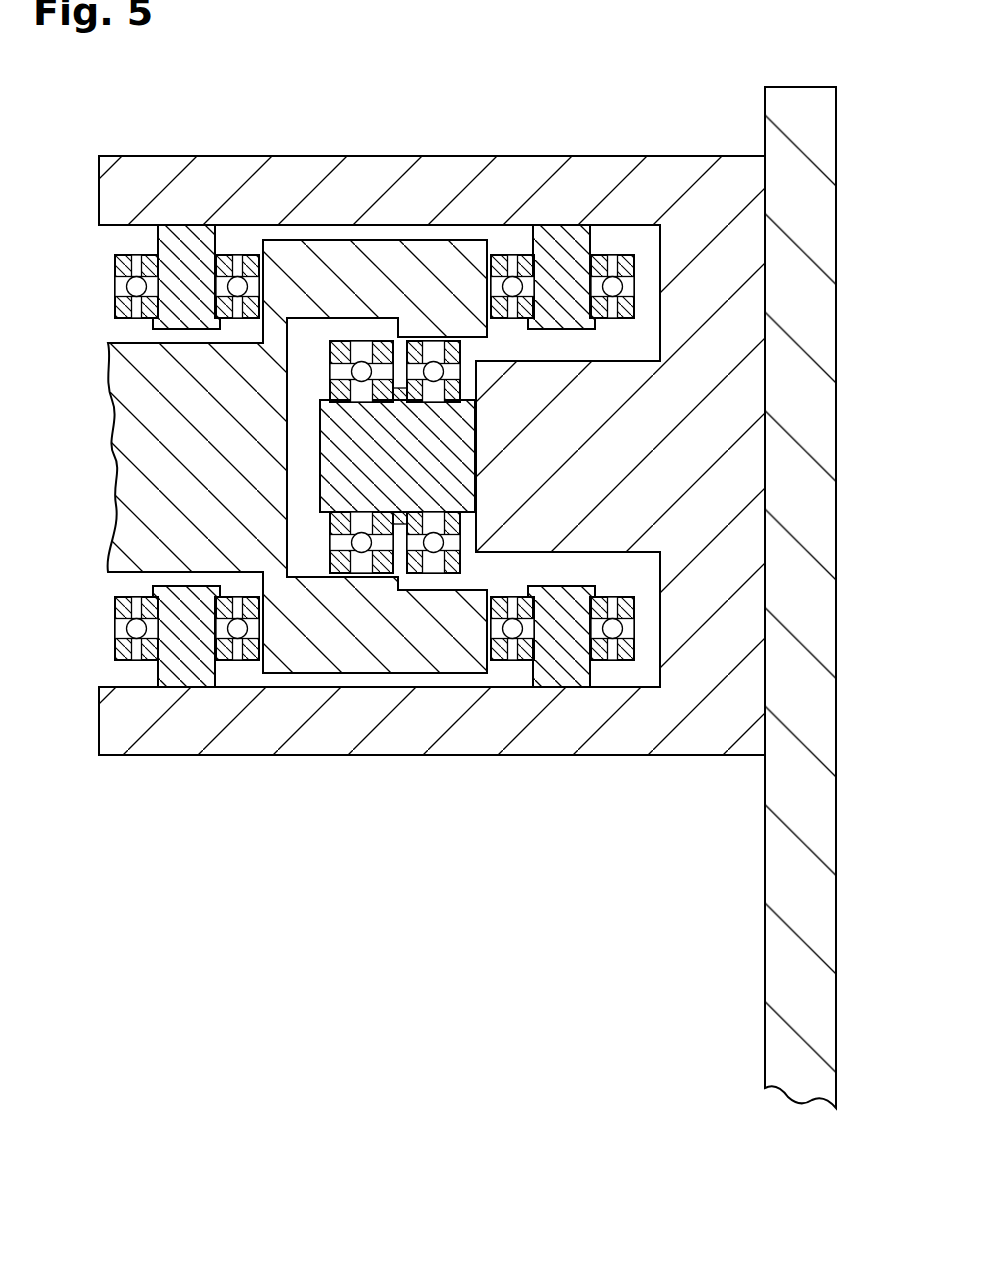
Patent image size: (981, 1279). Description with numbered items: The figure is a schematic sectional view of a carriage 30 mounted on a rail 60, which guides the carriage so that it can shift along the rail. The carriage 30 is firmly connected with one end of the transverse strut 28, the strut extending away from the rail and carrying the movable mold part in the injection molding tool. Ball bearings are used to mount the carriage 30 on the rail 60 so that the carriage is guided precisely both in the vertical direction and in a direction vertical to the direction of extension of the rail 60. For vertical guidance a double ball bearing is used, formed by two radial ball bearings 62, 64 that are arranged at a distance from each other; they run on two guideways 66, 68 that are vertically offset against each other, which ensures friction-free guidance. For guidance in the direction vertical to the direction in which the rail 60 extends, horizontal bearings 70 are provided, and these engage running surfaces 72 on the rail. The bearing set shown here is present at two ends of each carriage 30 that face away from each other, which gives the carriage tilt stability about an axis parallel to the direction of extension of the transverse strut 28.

The transverse strut 28 is at (800, 980).
The carriage 30 is at (714, 195).
The rail 60 is at (147, 453).
The radial ball bearing 62 is at (420, 352).
The radial ball bearing 64 is at (350, 562).
The guideway 66 is at (478, 347).
The guideway 68 is at (318, 575).
The horizontal bearing 70 is at (148, 262).
The running surface 72 is at (262, 667).